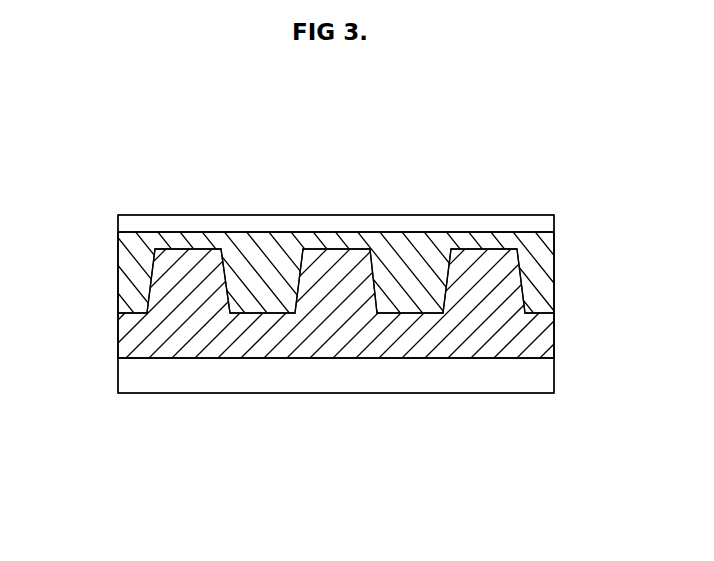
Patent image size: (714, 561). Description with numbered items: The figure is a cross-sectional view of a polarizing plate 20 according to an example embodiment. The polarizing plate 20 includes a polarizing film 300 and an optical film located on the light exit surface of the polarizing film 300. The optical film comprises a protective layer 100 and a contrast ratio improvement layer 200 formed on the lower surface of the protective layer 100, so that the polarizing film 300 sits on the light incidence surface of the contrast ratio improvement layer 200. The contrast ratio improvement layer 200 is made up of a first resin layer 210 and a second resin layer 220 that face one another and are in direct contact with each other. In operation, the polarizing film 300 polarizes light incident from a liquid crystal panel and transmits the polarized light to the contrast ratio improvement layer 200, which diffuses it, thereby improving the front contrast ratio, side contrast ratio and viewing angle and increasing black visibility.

The polarizing plate 20 is at (533, 175).
The protective layer 100 is at (546, 222).
The contrast ratio improvement layer 200 is at (563, 232).
The first resin layer 210 is at (118, 333).
The second resin layer 220 is at (118, 276).
The polarizing film 300 is at (546, 378).